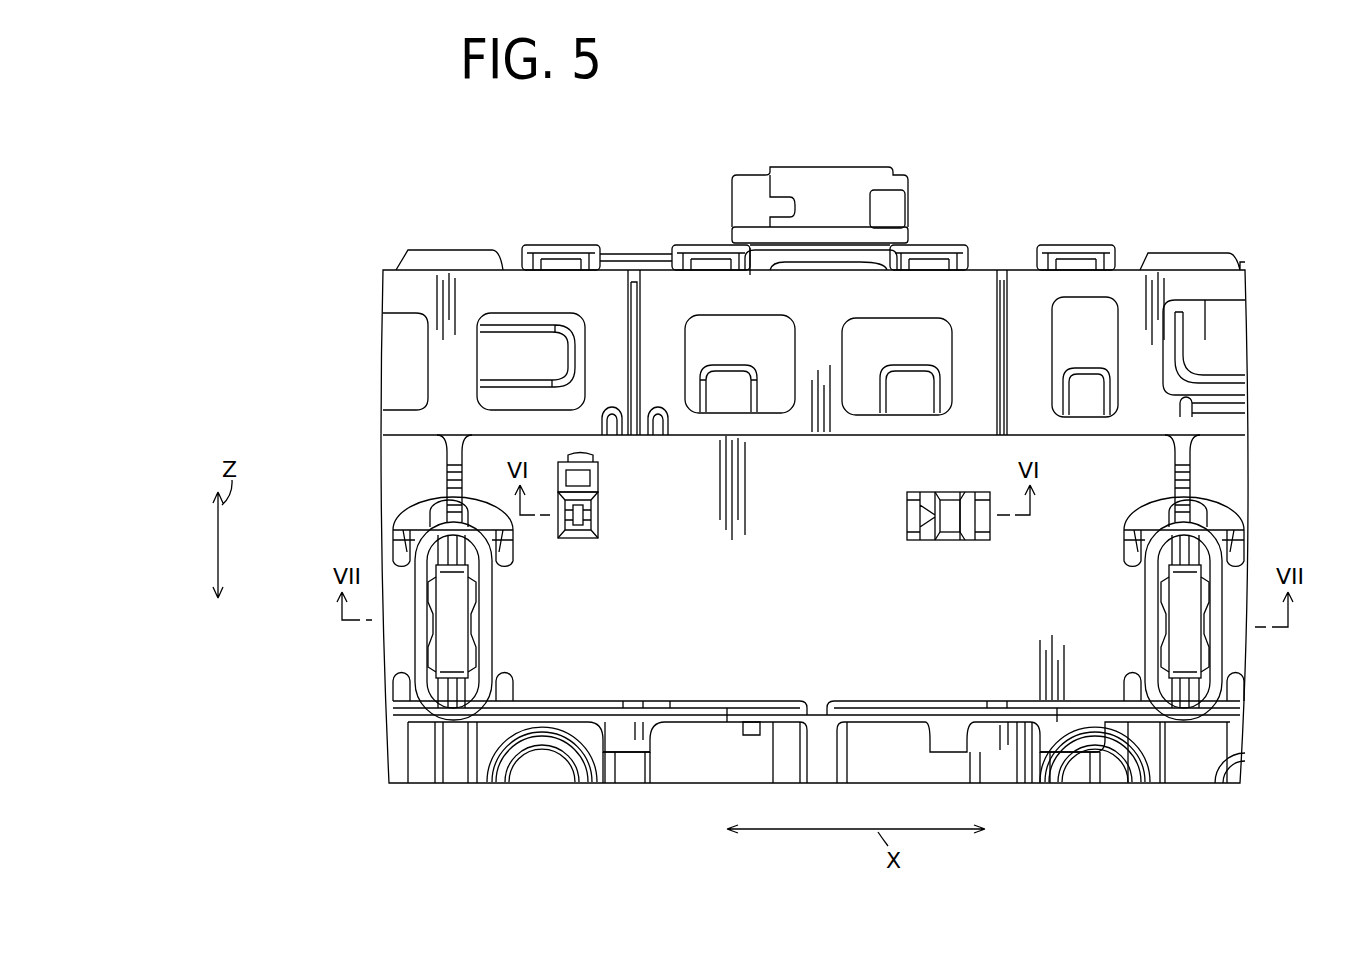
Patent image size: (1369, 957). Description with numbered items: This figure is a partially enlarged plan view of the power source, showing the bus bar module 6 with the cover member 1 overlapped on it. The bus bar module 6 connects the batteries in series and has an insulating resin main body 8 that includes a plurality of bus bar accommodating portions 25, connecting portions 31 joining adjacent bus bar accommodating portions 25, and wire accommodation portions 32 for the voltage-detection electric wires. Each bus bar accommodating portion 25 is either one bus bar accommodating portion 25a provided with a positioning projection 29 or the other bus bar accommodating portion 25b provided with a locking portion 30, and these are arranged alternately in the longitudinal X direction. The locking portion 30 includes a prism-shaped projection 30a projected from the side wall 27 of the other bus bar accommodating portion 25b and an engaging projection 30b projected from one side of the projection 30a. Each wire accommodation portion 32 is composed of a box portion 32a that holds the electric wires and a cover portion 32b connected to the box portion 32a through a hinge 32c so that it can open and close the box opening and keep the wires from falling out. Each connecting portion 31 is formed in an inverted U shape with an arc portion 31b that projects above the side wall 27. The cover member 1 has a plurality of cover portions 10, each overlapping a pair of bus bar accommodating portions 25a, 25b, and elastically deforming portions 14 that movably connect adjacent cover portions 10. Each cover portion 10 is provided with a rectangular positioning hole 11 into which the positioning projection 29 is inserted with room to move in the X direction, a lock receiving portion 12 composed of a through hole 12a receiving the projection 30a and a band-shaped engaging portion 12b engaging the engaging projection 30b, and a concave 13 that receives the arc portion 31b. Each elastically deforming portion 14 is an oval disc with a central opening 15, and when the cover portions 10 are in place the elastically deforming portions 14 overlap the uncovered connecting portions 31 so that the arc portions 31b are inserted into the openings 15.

The cover member 1 is at (1160, 431).
The bus bar module 6 is at (1004, 240).
The main body 8 is at (1024, 263).
The cover portion 10 is at (397, 484).
The positioning hole 11 is at (978, 540).
The lock receiving portion 12 is at (629, 467).
The through hole 12a is at (568, 455).
The engaging portion 12b is at (583, 485).
The concave 13 is at (460, 734).
The elastically deforming portion 14 is at (430, 530).
The opening 15 is at (418, 560).
The bus bar accommodating portion 25 is at (882, 785).
The one bus bar accommodating portion 25a is at (1098, 733).
The other bus bar accommodating portion 25b is at (689, 733).
The side wall 27 is at (727, 712).
The positioning projection 29 is at (938, 515).
The locking portion 30 is at (629, 527).
The projection 30a is at (597, 530).
The engaging projection 30b is at (585, 510).
The connecting portion 31 is at (433, 636).
The arc portion 31b is at (455, 618).
The wire accommodation portion 32 is at (570, 258).
The box portion 32a is at (570, 400).
The cover portion 32b is at (507, 290).
The hinge 32c is at (447, 262).